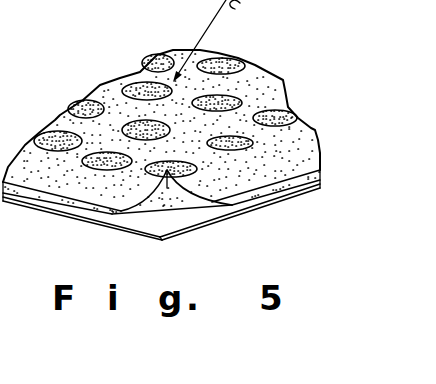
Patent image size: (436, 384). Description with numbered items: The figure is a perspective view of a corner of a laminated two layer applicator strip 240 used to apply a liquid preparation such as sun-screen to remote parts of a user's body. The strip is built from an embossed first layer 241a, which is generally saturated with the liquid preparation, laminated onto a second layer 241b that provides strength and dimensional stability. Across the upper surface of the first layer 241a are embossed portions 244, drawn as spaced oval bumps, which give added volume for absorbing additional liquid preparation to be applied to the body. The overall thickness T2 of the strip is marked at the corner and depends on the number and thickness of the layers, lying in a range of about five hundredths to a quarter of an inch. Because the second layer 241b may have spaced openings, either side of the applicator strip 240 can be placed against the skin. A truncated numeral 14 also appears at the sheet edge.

The laminated two layer applicator strip 240 is at (88, 100).
The embossed portions 244 is at (231, 60).
The embossed first layer 241a is at (250, 199).
The second layer 241b is at (221, 217).
The thickness of the applicator strip T2 is at (53, 160).
The partial numeral (cut off at sheet edge) 14 is at (13, 44).